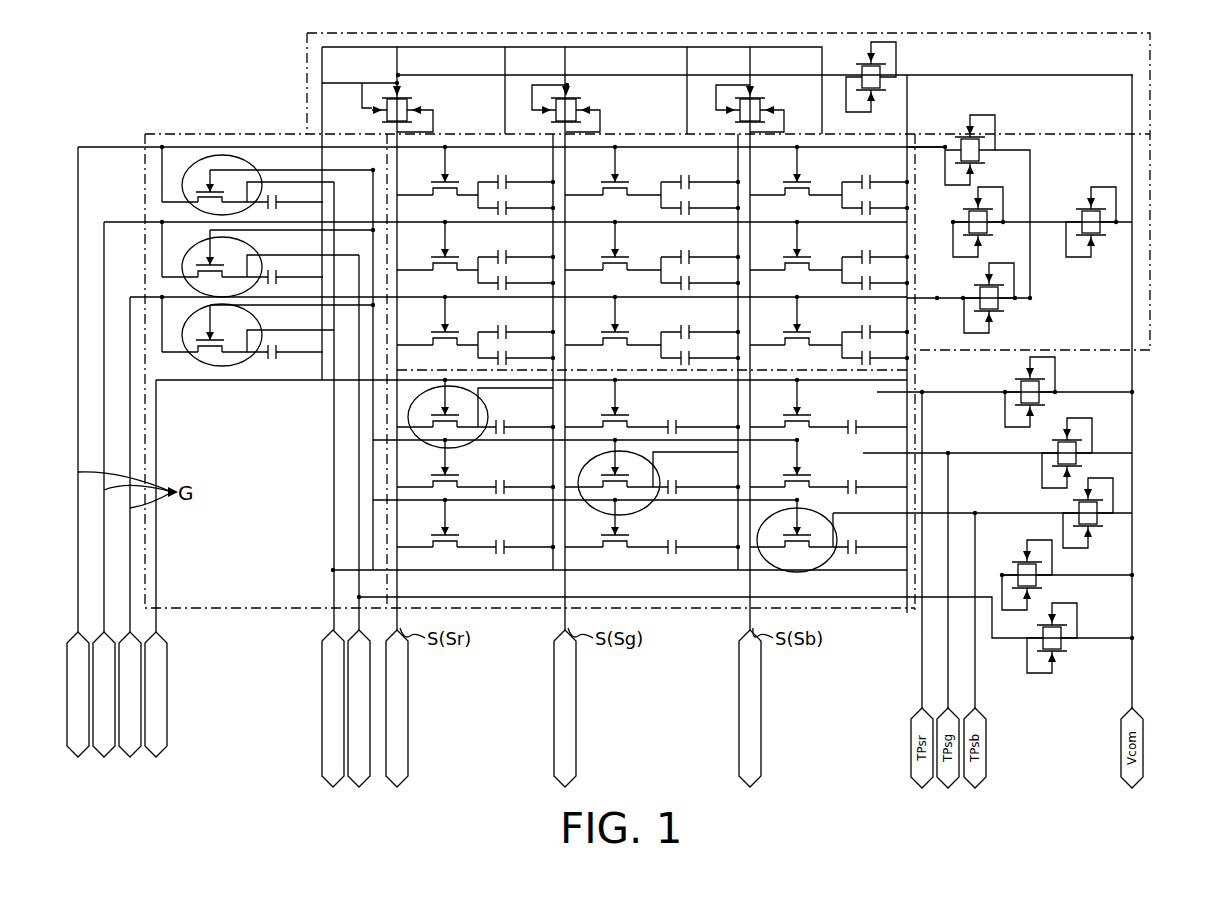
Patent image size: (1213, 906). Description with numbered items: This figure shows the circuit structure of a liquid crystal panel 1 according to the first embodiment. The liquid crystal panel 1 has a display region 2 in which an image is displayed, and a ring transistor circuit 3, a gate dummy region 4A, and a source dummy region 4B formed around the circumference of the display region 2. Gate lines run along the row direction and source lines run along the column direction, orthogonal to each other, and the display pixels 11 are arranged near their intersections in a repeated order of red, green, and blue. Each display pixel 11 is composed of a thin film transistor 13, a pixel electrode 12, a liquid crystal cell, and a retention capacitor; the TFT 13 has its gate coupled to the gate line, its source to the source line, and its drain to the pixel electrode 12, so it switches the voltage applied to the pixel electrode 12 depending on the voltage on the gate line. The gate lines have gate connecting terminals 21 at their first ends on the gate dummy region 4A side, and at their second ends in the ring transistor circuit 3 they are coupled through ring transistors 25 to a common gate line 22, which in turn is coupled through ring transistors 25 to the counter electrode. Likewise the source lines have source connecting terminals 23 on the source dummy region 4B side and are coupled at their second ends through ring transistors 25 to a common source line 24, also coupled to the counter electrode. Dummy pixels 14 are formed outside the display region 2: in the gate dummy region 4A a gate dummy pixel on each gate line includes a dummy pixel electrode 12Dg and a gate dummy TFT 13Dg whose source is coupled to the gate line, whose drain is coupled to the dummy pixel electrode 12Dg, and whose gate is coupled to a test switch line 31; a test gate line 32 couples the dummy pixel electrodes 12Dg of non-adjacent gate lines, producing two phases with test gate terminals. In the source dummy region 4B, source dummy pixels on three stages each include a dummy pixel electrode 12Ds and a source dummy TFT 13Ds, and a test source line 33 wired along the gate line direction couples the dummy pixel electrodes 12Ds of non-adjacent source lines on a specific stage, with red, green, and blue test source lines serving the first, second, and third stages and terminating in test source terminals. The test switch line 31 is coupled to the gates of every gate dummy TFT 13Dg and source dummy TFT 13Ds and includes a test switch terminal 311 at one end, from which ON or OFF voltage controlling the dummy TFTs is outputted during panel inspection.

The liquid crystal panel 1 is at (228, 62).
The display region 2 is at (487, 140).
The ring transistor circuit 3 is at (630, 38).
The gate dummy region 4A is at (230, 584).
The source dummy region 4B is at (840, 608).
The display pixel 11 is at (637, 168).
The pixel electrode 12 is at (478, 192).
The thin film transistor 13 is at (430, 184).
The dummy pixel 14 is at (188, 166).
The dummy pixel electrode 12Dg is at (247, 205).
The gate dummy TFT 13Dg is at (222, 188).
The dummy pixel electrode 12Ds is at (476, 422).
The source dummy TFT 13Ds is at (452, 442).
The gate connecting terminal 21 is at (128, 756).
The common gate line 22 is at (1030, 193).
The source connecting terminal 23 is at (408, 755).
The common source line 24 is at (640, 74).
The ring transistor 25 is at (413, 104).
The test switch line 31 is at (318, 384).
The test gate line 32 is at (359, 522).
The test source line 33 is at (877, 392).
The test switch terminal 311 is at (167, 733).